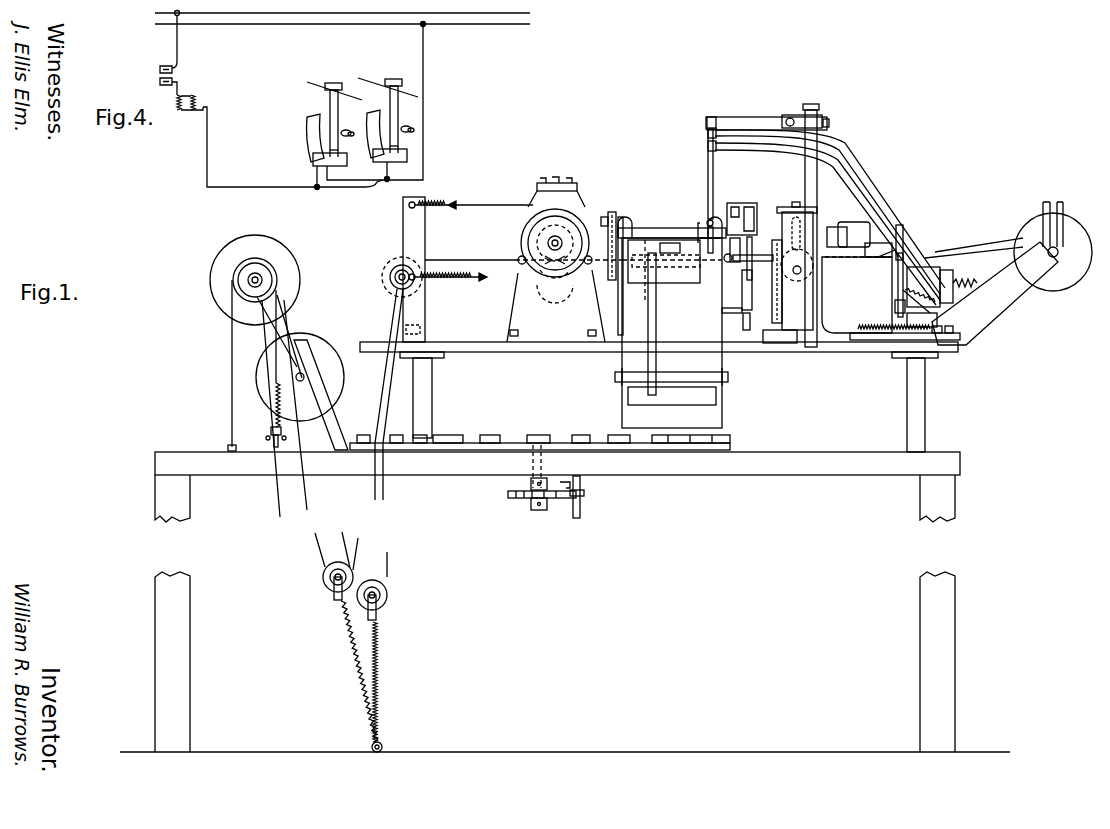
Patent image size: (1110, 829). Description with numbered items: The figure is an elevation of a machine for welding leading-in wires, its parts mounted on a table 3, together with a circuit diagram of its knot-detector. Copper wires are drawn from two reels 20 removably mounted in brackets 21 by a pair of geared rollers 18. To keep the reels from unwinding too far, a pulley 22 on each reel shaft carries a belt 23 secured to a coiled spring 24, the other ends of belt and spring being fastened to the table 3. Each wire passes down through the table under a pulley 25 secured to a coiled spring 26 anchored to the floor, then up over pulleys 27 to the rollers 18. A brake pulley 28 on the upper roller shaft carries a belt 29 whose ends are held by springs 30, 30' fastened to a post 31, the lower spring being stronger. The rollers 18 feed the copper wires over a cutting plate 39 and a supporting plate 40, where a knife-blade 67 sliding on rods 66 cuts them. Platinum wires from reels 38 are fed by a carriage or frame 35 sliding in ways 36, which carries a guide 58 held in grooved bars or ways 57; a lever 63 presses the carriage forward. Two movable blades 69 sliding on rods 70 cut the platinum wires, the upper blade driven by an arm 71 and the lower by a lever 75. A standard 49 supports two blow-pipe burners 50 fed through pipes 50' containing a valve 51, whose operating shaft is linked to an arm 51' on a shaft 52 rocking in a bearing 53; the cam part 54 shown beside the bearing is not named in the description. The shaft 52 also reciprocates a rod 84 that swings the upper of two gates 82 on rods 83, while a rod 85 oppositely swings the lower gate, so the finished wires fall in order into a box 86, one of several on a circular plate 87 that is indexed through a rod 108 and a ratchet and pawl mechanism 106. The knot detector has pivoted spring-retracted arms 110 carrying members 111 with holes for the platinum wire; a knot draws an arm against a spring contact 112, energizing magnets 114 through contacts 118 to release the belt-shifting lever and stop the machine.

In FIG. 1, the table 3 is at (186, 462).
In FIG. 1, the rollers 18 is at (567, 229).
In FIG. 1, the reels 20 is at (290, 278).
In FIG. 1, the brackets 21 is at (328, 420).
In FIG. 1, the pulley 22 is at (265, 274).
In FIG. 1, the belt 23 is at (230, 350).
In FIG. 1, the coiled spring 24 is at (270, 428).
In FIG. 1, the pulley 25 is at (326, 582).
In FIG. 1, the coiled spring 26 is at (350, 650).
In FIG. 1, the pulleys 27 is at (391, 270).
In FIG. 1, the brake pulley 28 is at (520, 246).
In FIG. 1, the belt 29 is at (475, 205).
In FIG. 1, the spring 30 is at (432, 196).
In FIG. 1, the spring 30' is at (448, 291).
In FIG. 1, the post 31 is at (420, 311).
In FIG. 1, the carriage or frame 35 is at (796, 343).
In FIG. 1, the ways 36 is at (836, 352).
In FIG. 1, the reels 38 is at (1082, 262).
In FIG. 1, the cutting plate 39 is at (598, 280).
In FIG. 1, the supporting plate 40 is at (674, 268).
In FIG. 1, the standard 49 is at (812, 222).
In FIG. 1, the blow-pipe burners 50 is at (697, 168).
In FIG. 1, the pipes 50' is at (826, 225).
In FIG. 1, the valve 51 is at (965, 278).
In FIG. 1, the arm 51' is at (886, 260).
In FIG. 1, the shaft 52 is at (866, 230).
In FIG. 1, the bearing 53 is at (857, 286).
In FIG. 1, the box 54 is at (835, 243).
In FIG. 1, the grooved bars or ways 57 is at (752, 264).
In FIG. 1, the guide 58 is at (775, 240).
In FIG. 1, the lever 63 is at (898, 322).
In FIG. 1, the rods 66 is at (614, 310).
In FIG. 1, the knife-blade 67 is at (617, 225).
In FIG. 1, the movable blades 69 is at (728, 262).
In FIG. 1, the rods 70 is at (735, 311).
In FIG. 1, the arm 71 is at (754, 212).
In FIG. 1, the lever 75 is at (751, 306).
In FIG. 1, the gates 82 is at (672, 330).
In FIG. 1, the rods 83 is at (643, 240).
In FIG. 1, the rod 84 is at (695, 224).
In FIG. 1, the rod 85 is at (657, 330).
In FIG. 1, the box 86 is at (468, 438).
In FIG. 1, the circular plate 87 is at (516, 442).
In FIG. 1, the ratchet and pawl mechanism 106 is at (520, 499).
In FIG. 1, the rod 108 is at (584, 493).
In FIG. 4, the pivoted spring-retracted arms 110 is at (342, 120).
In FIG. 1, the pivoted spring-retracted arms 110 is at (938, 320).
In FIG. 4, the member 111 is at (330, 84).
In FIG. 1, the member 111 is at (897, 255).
In FIG. 4, the spring contact 112 is at (312, 116).
In FIG. 1, the spring contact 112 is at (900, 291).
In FIG. 4, the magnets 114 is at (202, 97).
In FIG. 4, the contacts 118 is at (184, 75).